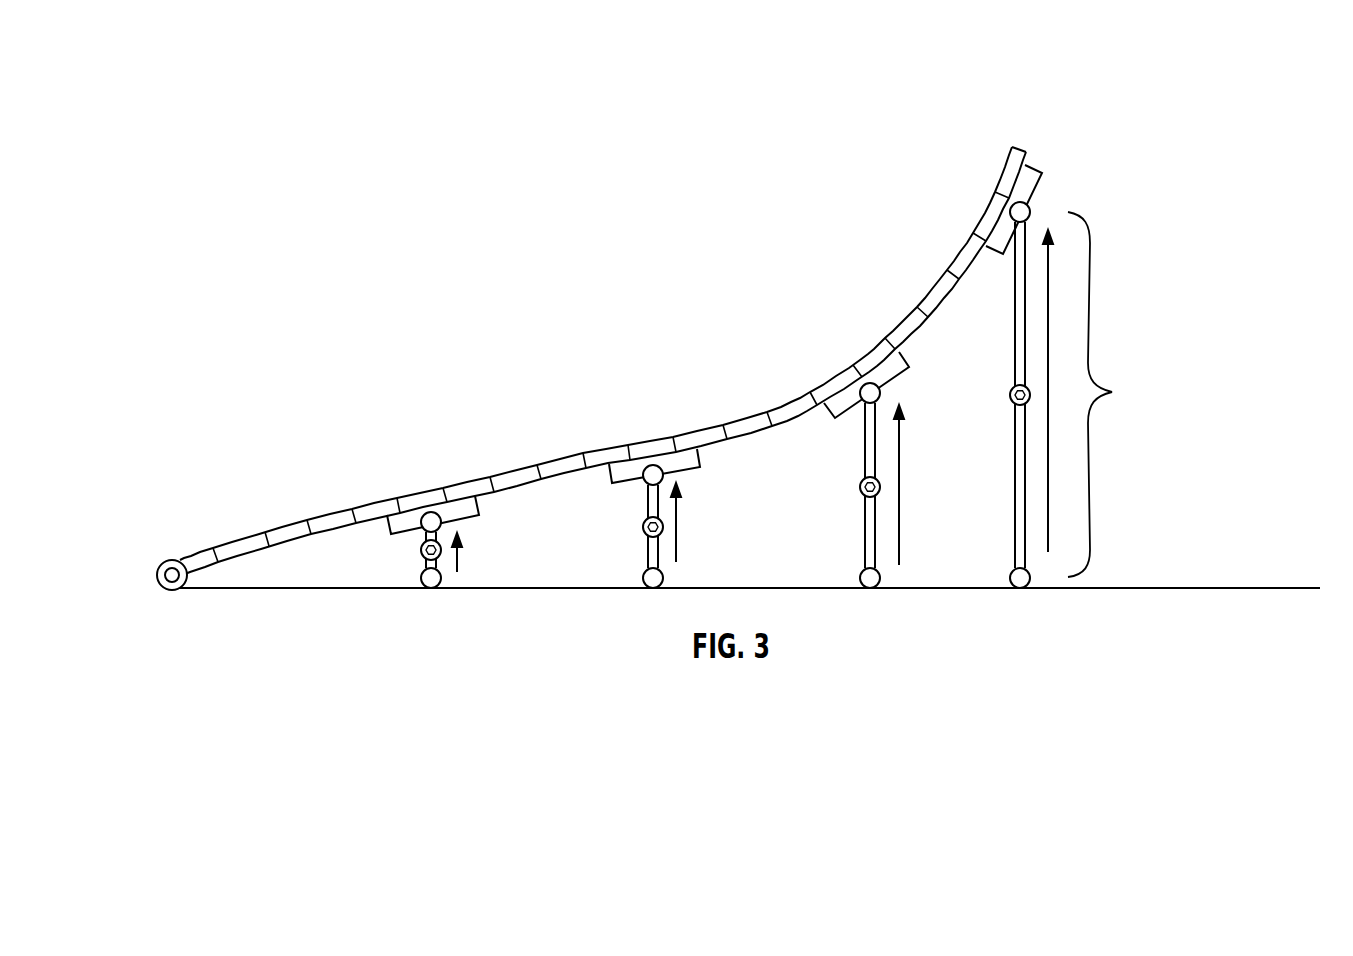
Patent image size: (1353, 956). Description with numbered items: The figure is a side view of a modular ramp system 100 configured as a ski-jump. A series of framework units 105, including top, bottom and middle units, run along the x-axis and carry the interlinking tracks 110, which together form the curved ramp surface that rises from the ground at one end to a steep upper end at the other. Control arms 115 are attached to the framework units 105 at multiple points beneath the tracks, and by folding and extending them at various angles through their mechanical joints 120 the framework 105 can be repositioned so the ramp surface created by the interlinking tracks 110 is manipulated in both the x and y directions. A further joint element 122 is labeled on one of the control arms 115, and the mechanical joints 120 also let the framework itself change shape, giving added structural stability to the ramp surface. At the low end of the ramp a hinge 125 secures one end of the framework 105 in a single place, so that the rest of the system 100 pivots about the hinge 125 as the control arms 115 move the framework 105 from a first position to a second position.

The modular ramp system 100 is at (651, 208).
The framework 105 is at (1031, 158).
The interlinking tracks 110 is at (1015, 147).
The control arm 115 is at (1114, 394).
The mechanical joints 120 is at (1010, 392).
The adjustment nut 122 is at (861, 490).
The hinge 125 is at (162, 587).